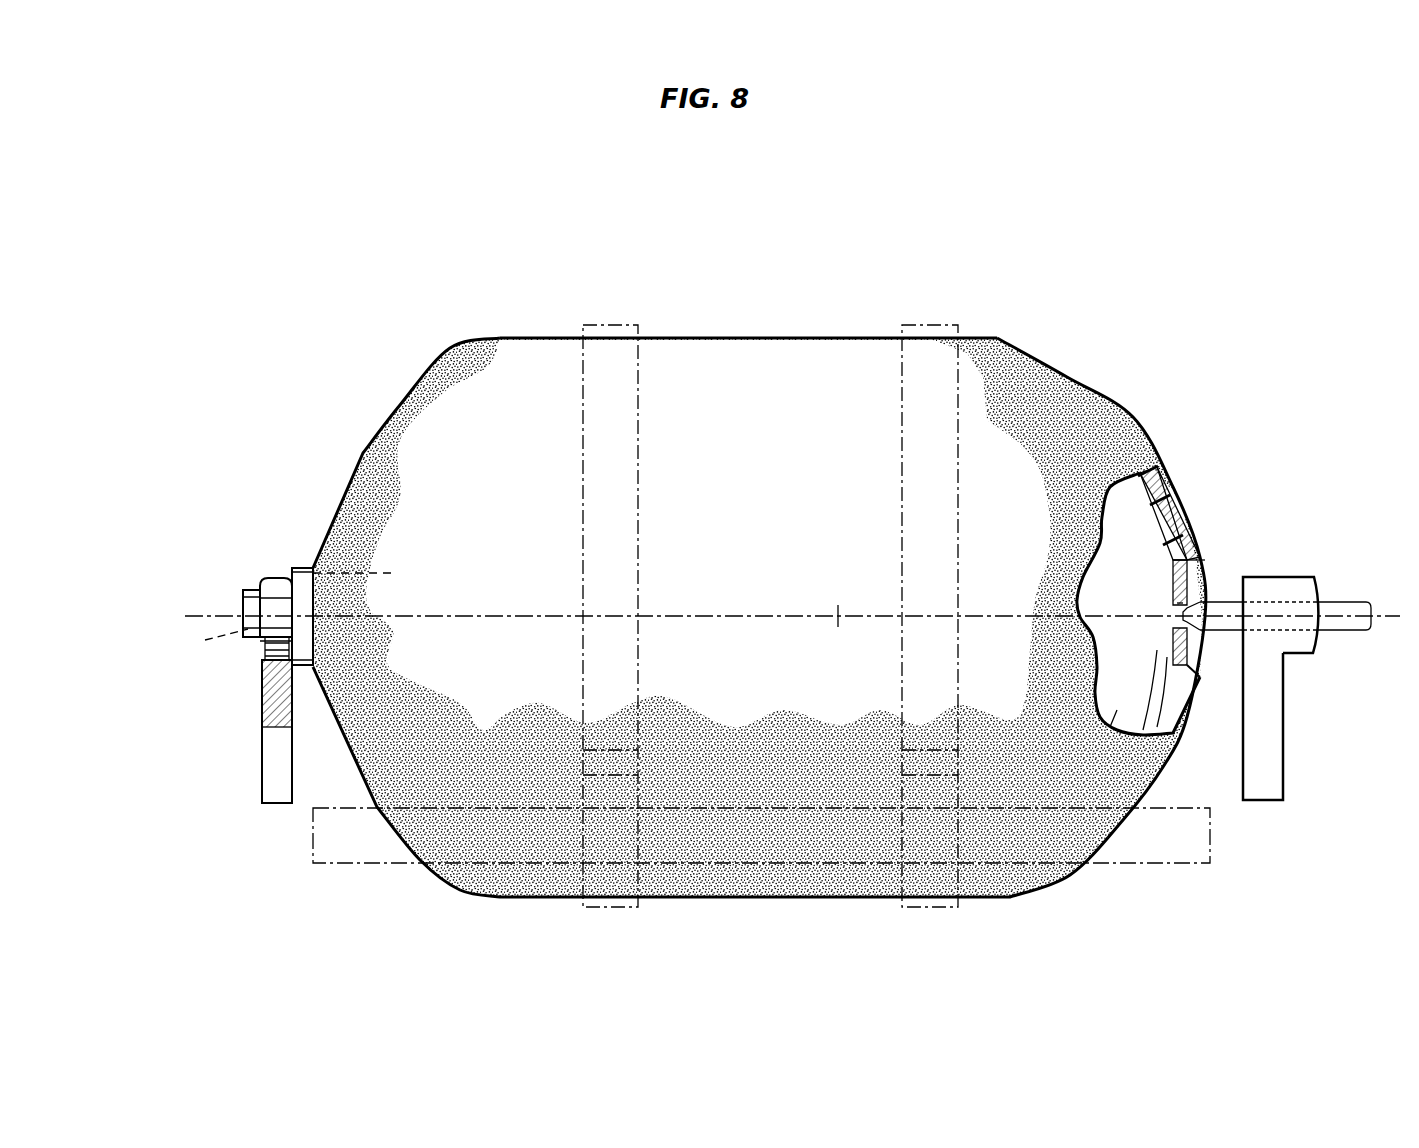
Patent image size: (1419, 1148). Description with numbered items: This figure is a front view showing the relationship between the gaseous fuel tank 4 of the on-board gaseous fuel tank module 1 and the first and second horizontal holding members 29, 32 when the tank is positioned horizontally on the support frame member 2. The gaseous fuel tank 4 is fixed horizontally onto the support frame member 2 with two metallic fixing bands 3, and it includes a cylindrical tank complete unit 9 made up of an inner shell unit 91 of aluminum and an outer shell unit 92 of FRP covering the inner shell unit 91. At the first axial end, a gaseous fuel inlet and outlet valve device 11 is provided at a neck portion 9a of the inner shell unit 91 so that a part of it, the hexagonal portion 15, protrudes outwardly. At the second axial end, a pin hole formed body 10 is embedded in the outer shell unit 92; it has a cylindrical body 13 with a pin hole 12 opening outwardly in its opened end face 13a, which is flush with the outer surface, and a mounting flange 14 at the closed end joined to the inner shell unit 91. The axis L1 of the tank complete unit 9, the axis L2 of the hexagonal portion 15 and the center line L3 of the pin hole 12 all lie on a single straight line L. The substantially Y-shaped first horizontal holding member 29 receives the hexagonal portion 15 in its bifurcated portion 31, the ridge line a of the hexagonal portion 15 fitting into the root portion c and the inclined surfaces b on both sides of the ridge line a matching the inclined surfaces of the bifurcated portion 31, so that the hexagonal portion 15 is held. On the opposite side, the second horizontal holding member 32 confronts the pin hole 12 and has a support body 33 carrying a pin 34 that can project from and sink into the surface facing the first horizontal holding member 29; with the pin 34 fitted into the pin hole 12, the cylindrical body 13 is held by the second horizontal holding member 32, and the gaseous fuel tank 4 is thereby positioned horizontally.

The on-board gaseous fuel tank module 1 is at (759, 559).
The support frame member 2 is at (780, 800).
The metallic fixing band 3 is at (620, 320).
The gaseous fuel tank 4 is at (717, 333).
The cylindrical tank complete unit 9 is at (687, 510).
The inner shell unit 91 is at (1130, 513).
The outer shell unit 92 is at (1182, 505).
The neck portion 9a is at (296, 568).
The pin hole formed body 10 is at (1167, 627).
The gaseous fuel inlet and outlet valve device 11 is at (242, 594).
The pin hole 12 is at (1203, 640).
The cylindrical body 13 is at (1190, 590).
The opened end face 13a is at (1213, 597).
The mounting flange 14 is at (988, 353).
The hexagonal portion 15 is at (272, 580).
The first horizontal holding member 29 is at (258, 770).
The bifurcated portion 31 is at (375, 573).
The second horizontal holding member 32 is at (1317, 696).
The support body 33 is at (1280, 775).
The pin 34 is at (1233, 602).
The single straight line L is at (748, 605).
The axis of the tank complete unit L1 is at (838, 605).
The axis of the hexagonal portion L2 is at (209, 647).
The center line of the pin hole L3 is at (1154, 574).
The ridge line a is at (280, 665).
The inclined surfaces b is at (263, 650).
The root portion c is at (262, 638).